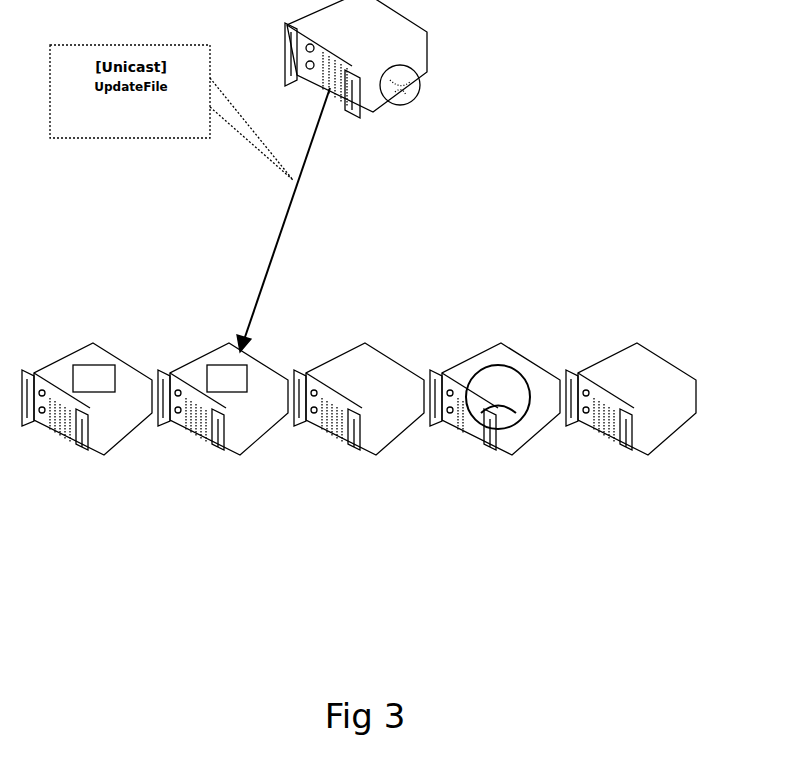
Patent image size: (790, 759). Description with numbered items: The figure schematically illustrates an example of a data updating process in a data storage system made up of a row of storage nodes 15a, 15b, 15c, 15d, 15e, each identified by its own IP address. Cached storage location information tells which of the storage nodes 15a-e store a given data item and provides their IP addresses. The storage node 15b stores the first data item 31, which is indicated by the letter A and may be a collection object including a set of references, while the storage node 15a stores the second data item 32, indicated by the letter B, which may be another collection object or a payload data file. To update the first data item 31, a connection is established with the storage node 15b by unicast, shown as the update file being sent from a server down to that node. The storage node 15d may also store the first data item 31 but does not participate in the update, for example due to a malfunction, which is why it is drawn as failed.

The storage node 15a is at (85, 495).
The storage node 15b is at (215, 495).
The storage node 15c is at (350, 495).
The storage node 15d is at (478, 495).
The storage node 15e is at (613, 495).
The first data item 31 is at (212, 365).
The second data item 32 is at (89, 365).